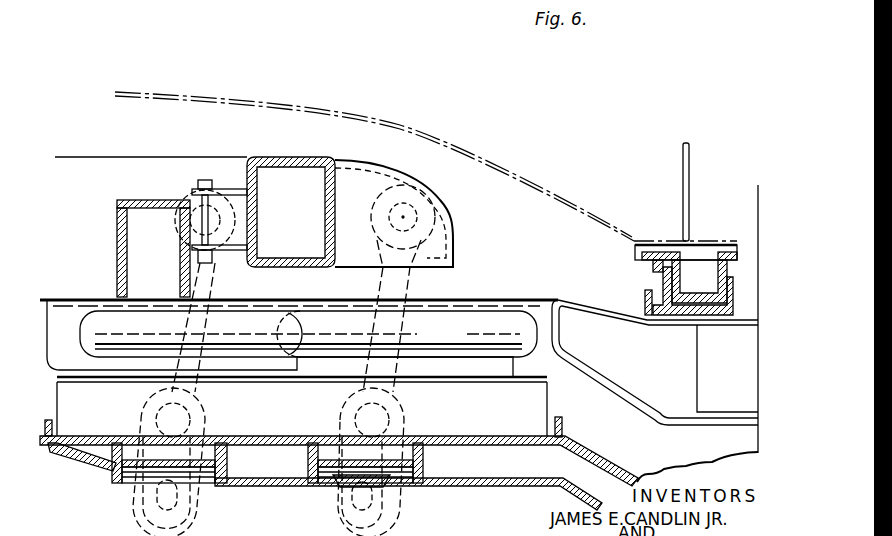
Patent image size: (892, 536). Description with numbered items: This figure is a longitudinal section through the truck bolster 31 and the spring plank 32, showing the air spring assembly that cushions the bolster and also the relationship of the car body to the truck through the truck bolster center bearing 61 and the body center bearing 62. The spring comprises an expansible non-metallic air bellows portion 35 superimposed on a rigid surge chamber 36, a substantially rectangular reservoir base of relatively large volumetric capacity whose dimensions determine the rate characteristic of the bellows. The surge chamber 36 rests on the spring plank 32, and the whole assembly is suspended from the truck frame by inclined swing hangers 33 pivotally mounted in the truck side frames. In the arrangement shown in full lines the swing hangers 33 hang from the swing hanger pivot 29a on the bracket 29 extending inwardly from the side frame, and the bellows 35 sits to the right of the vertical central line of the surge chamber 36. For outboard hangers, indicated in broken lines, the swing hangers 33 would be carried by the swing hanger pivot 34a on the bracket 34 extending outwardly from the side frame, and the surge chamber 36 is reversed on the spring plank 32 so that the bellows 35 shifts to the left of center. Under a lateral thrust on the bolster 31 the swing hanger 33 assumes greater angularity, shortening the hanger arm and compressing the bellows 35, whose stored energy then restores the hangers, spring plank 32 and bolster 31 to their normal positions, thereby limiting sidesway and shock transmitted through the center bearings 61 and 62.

The bracket 29 is at (455, 217).
The swing hanger pivot 29a is at (407, 212).
The truck bolster 31 is at (655, 362).
The spring plank 32 is at (588, 487).
The swing hanger 33 is at (408, 295).
The bracket 34 is at (203, 188).
The swing hanger pivot 34a is at (197, 208).
The air bellows portion 35 is at (308, 334).
The surge chamber 36 is at (302, 406).
The truck bolster center bearing 61 is at (668, 281).
The body center bearing 62 is at (692, 290).